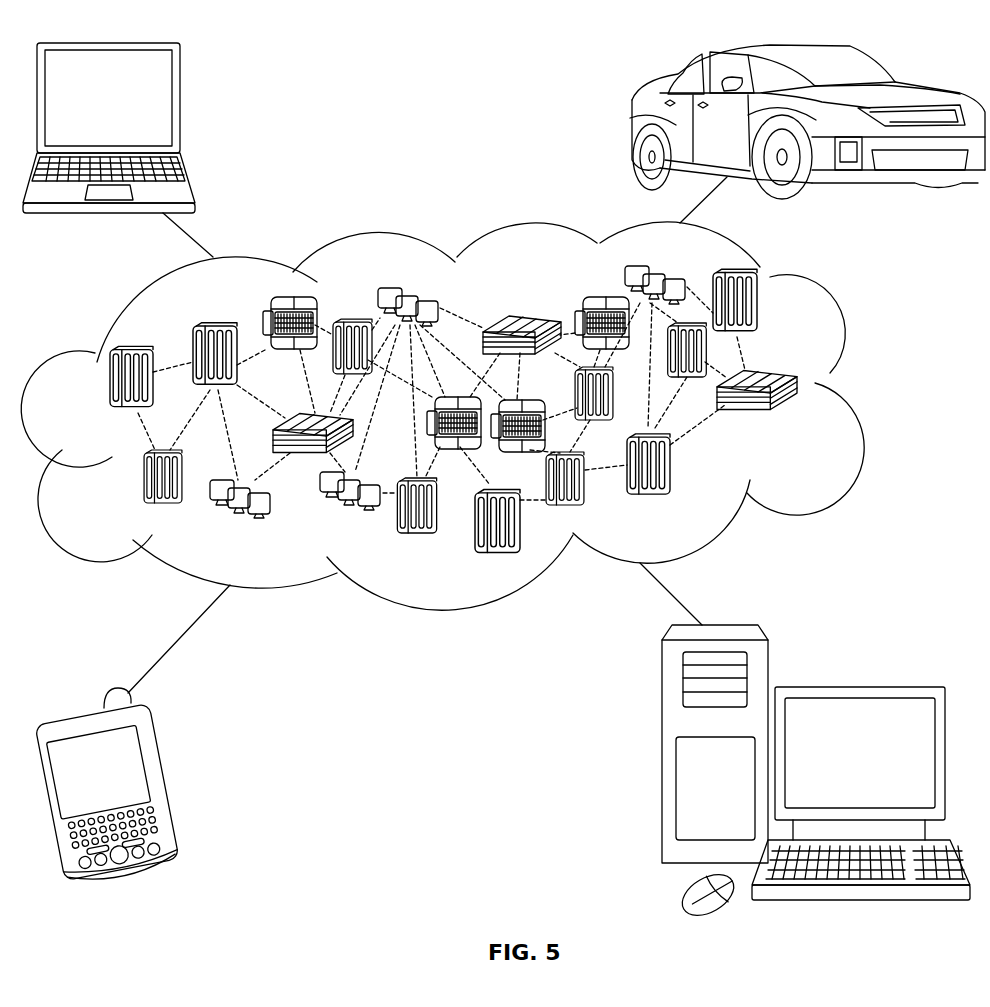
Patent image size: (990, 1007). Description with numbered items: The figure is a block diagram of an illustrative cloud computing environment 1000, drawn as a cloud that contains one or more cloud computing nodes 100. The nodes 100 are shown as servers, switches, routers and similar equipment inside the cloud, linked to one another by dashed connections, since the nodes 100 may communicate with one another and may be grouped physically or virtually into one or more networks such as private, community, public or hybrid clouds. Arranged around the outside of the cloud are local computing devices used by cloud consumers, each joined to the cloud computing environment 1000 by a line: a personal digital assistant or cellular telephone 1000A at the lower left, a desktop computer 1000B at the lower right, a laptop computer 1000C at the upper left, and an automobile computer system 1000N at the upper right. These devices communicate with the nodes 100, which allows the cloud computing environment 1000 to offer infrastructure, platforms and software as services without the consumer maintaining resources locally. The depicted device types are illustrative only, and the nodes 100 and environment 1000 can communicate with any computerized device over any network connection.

The cloud computing nodes 100 is at (796, 417).
The cloud computing environment 1000 is at (858, 394).
The personal digital assistant (PDA) or cellular telephone 1000A is at (170, 784).
The desktop computer 1000B is at (857, 685).
The laptop computer 1000C is at (181, 109).
The automobile computer system 1000N is at (630, 126).